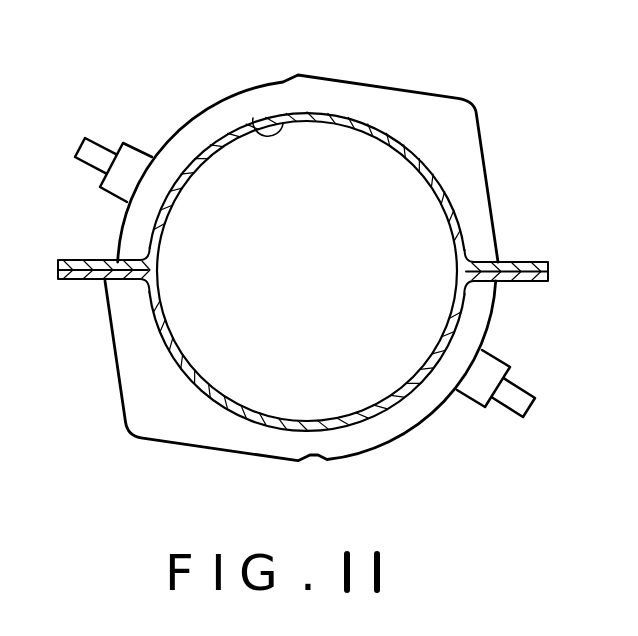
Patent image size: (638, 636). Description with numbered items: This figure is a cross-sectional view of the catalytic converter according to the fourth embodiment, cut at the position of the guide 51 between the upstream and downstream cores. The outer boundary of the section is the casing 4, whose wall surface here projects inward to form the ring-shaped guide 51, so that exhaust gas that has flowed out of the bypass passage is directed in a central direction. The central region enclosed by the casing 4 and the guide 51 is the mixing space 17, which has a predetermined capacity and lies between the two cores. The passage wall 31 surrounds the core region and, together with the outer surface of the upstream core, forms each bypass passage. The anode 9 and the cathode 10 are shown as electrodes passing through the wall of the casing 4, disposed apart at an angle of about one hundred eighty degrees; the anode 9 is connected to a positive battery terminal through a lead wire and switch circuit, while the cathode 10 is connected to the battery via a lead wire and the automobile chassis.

The casing 4 is at (78, 260).
The anode 9 is at (102, 147).
The cathode 10 is at (508, 408).
The mixing space 17 is at (335, 153).
The passage wall 31 is at (462, 96).
The guide 51 is at (254, 118).